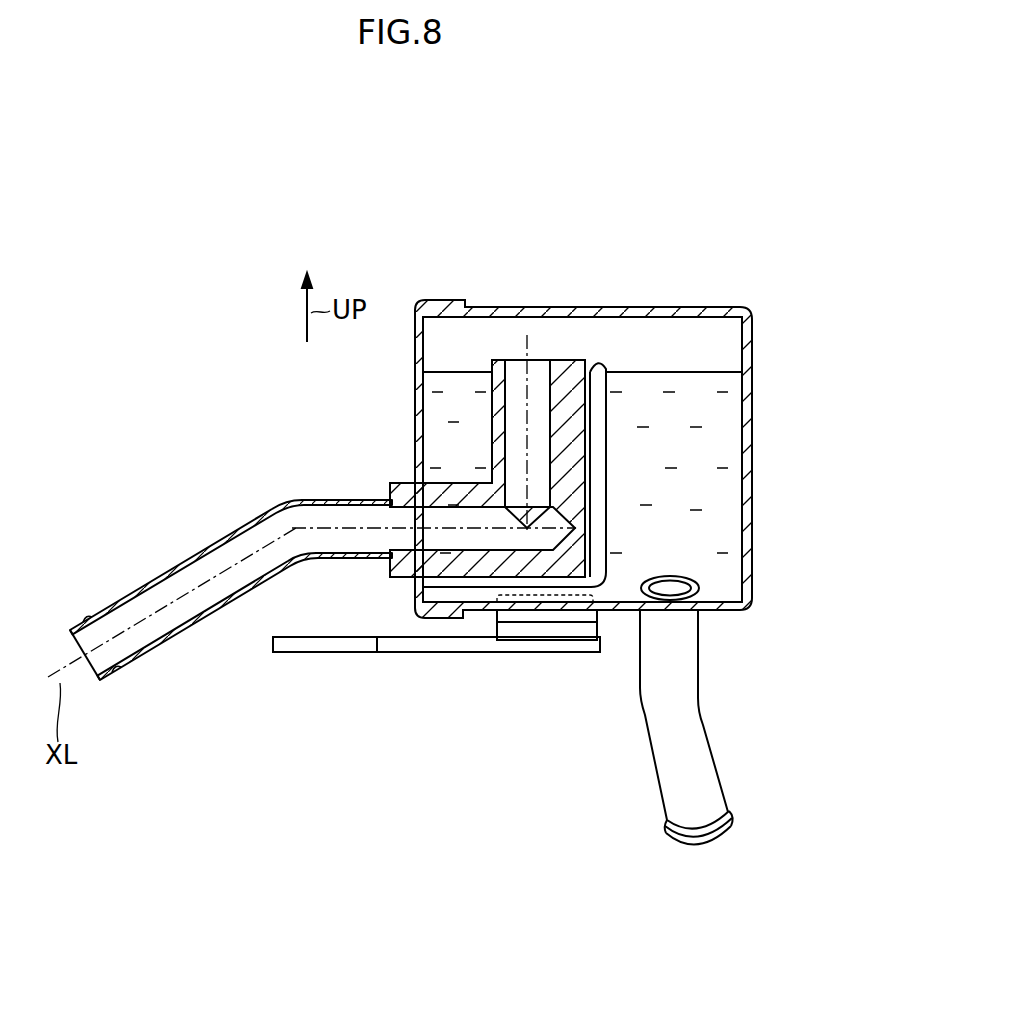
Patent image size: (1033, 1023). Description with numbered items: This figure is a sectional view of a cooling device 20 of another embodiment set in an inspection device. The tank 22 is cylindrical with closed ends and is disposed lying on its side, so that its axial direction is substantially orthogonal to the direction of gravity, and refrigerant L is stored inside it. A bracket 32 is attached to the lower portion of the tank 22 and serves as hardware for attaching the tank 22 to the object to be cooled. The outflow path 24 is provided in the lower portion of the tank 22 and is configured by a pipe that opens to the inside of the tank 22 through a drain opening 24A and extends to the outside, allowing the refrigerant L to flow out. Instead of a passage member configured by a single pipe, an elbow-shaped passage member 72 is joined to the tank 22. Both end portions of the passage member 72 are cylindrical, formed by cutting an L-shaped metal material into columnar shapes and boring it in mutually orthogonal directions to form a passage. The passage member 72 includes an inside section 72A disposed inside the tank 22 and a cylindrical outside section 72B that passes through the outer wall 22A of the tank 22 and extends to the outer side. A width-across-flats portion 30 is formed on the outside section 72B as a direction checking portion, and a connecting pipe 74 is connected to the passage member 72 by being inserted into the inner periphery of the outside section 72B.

The reservoir tank assembly 20 is at (694, 244).
The tank 22 is at (757, 359).
The outer wall 22A is at (753, 407).
The refrigerant L is at (725, 492).
The outflow path 24 is at (705, 675).
The drain hole 24A is at (666, 576).
The passage member 72 is at (570, 354).
The inside section 72A is at (607, 492).
The outside section 72B is at (402, 580).
The width-across-flats portion 30 is at (398, 481).
The connecting pipe 74 is at (156, 579).
The bracket 32 is at (395, 654).